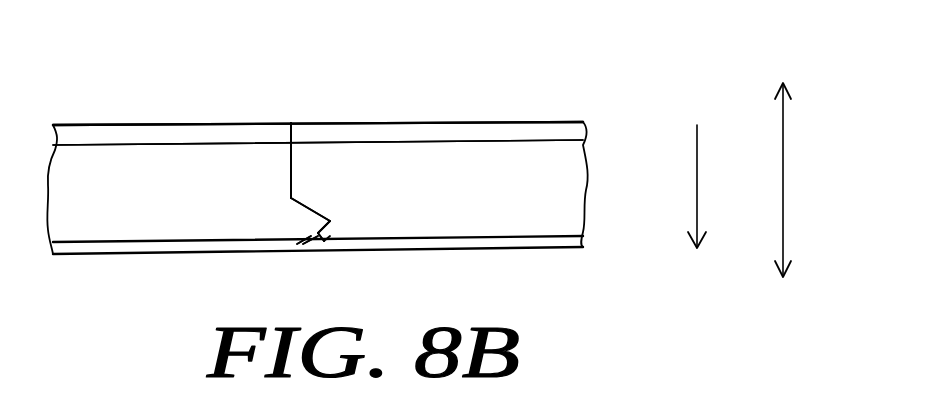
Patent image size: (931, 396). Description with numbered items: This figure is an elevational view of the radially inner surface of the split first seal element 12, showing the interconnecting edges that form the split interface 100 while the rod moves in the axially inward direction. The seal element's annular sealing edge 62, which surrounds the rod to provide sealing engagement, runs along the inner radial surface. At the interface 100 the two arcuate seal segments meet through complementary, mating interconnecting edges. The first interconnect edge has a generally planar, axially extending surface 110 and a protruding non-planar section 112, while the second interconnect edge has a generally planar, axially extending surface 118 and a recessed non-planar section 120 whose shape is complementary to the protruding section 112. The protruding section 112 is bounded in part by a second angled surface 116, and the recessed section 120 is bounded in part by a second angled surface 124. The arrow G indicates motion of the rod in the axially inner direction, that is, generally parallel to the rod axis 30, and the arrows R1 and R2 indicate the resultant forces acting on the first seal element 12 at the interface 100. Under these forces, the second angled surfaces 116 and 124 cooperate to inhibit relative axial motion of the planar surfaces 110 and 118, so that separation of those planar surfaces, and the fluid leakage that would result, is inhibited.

The first seal element 12 is at (107, 78).
The annular sealing edge 62 is at (192, 127).
The interface 100 is at (291, 115).
The axially extending surface 110 is at (289, 157).
The axially extending surface 118 is at (293, 155).
The resultant force R1 is at (299, 209).
The protruding non-planar section 112 is at (285, 222).
The resultant force R2 is at (315, 231).
The second angled surface 116 is at (297, 241).
The recessed non-planar section 120 is at (350, 222).
The second angled surface 124 is at (332, 233).
The arrow indicating rod motion G is at (698, 184).
The rod axis 30 is at (784, 184).